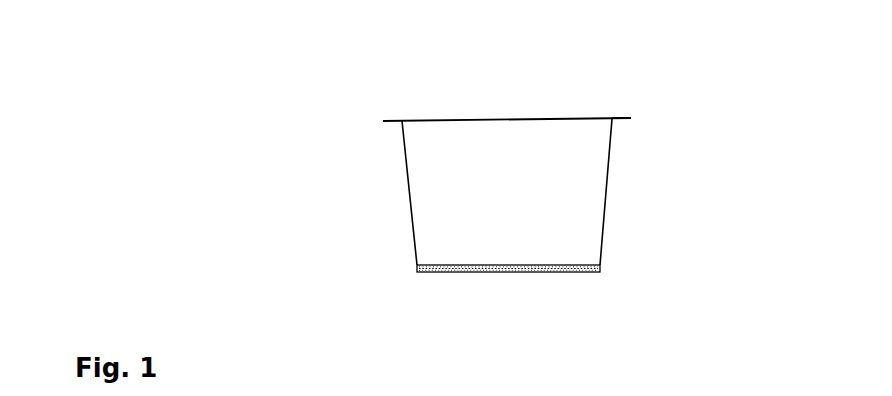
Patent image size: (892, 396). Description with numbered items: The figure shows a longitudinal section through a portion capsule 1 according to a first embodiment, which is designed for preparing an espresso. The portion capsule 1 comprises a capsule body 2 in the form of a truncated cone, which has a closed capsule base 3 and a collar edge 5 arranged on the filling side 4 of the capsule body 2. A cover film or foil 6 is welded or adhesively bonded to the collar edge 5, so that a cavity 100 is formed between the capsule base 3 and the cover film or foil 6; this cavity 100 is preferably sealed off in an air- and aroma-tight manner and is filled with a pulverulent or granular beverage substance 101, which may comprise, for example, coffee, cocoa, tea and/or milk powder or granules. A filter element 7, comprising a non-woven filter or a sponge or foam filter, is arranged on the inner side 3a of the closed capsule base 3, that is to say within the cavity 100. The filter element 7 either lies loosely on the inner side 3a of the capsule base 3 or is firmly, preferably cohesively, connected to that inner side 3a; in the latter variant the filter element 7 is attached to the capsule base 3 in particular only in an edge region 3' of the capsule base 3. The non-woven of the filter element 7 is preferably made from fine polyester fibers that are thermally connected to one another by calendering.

The portion capsule 1 is at (486, 106).
The capsule body 2 is at (609, 171).
The capsule base 3 is at (508, 296).
The inner side 3a is at (432, 245).
The edge region 3' is at (406, 318).
The filling side 4 is at (553, 109).
The collar edge 5 is at (628, 117).
The cover film or foil 6 is at (453, 120).
The filter element 7 is at (553, 267).
The cavity 100 is at (563, 205).
The beverage substance 101 is at (637, 233).